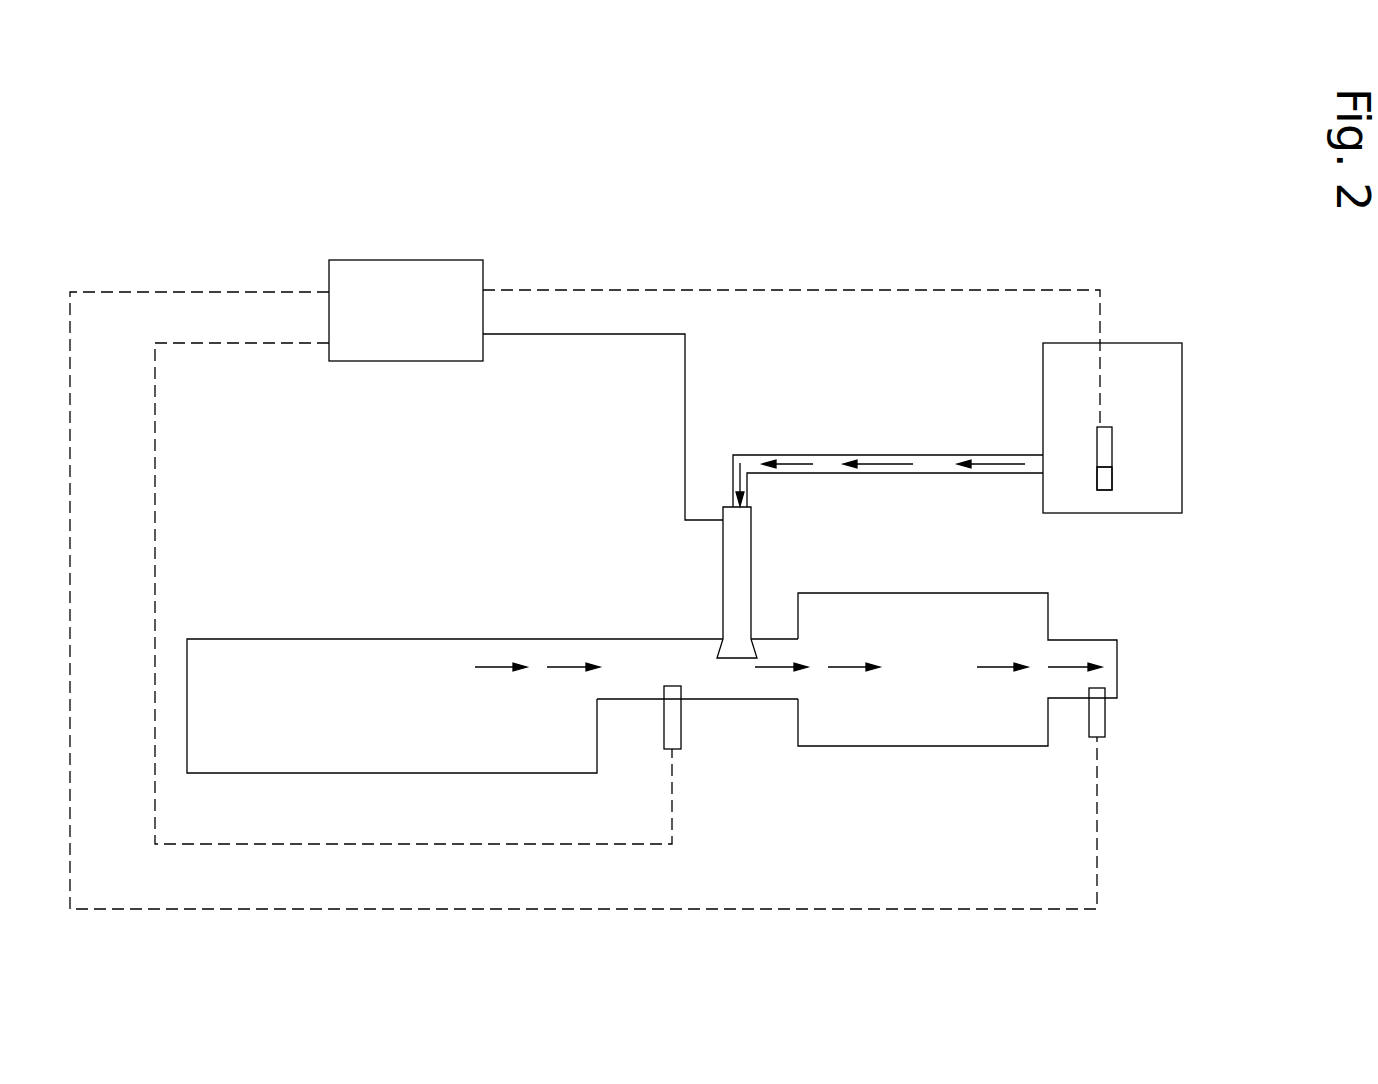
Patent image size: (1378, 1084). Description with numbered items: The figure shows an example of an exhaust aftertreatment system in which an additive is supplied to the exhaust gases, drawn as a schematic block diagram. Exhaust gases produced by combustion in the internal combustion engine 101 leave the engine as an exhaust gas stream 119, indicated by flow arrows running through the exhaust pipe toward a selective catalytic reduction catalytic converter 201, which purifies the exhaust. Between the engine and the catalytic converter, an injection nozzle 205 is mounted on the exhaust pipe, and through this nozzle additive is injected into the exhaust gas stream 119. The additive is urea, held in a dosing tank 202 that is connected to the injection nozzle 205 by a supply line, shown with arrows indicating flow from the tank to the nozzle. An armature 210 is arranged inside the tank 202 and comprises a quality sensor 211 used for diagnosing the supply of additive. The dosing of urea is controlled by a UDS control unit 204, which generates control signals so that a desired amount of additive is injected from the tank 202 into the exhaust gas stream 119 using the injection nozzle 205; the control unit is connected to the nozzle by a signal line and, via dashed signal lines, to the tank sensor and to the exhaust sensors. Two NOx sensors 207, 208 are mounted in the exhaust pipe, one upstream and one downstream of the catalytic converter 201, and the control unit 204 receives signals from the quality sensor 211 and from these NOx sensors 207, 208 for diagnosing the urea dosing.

The internal combustion engine 101 is at (418, 710).
The exhaust gas stream 119 is at (501, 665).
The selective catalytic reduction (SCR) catalytic converter 201 is at (980, 717).
The dosing tank 202 is at (1140, 365).
The UDS control unit 204 is at (417, 343).
The injection nozzle 205 is at (733, 611).
The NOx sensor 207 is at (674, 723).
The NOx sensor 208 is at (1100, 722).
The armature 210 is at (1104, 437).
The quality sensor 211 is at (1106, 486).